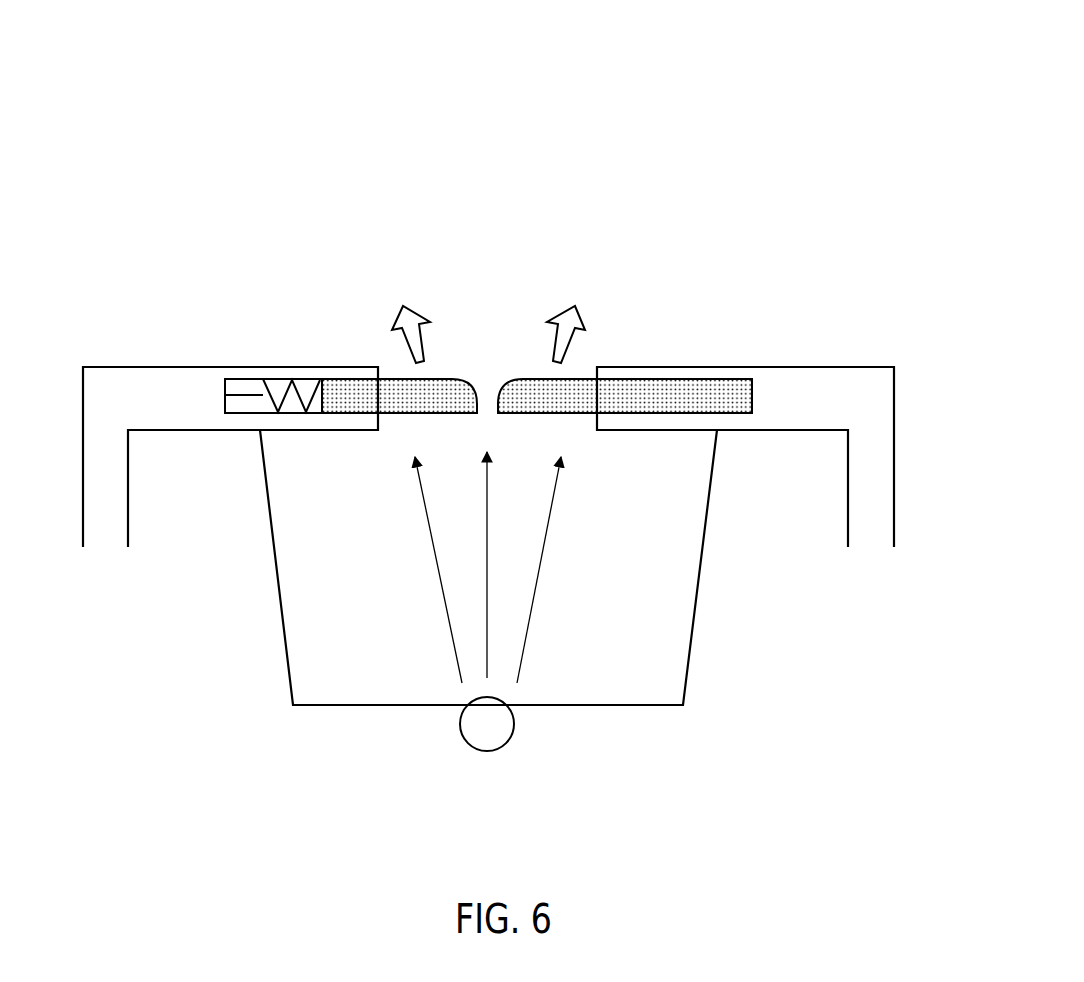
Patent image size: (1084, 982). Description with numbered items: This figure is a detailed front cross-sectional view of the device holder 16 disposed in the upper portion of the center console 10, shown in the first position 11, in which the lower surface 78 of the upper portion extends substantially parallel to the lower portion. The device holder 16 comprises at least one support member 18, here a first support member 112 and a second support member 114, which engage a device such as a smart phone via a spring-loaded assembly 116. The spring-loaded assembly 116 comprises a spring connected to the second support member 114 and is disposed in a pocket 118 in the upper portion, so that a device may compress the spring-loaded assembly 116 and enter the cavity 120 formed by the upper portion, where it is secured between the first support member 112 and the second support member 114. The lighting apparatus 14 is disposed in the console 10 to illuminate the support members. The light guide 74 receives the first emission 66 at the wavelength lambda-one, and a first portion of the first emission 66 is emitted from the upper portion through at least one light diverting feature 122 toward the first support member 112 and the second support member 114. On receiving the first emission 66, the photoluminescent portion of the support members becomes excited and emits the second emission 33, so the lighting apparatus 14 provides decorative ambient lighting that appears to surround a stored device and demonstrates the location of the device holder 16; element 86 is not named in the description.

The center console 10 is at (858, 158).
The first position 11 is at (809, 186).
The lighting apparatus 14 is at (740, 116).
The device holder 16 is at (376, 226).
The support member 18 is at (518, 349).
The second emission 33 is at (409, 335).
The first emission 66 is at (530, 605).
The light guide 74 is at (555, 706).
The lower surface 78 is at (860, 378).
The light emitter 86 is at (555, 706).
The first support member 112 is at (570, 378).
The second support member 114 is at (398, 378).
The spring-loaded assembly 116 is at (277, 383).
The pocket 118 is at (248, 403).
The cavity 120 is at (488, 567).
The light diverting feature 122 is at (512, 696).